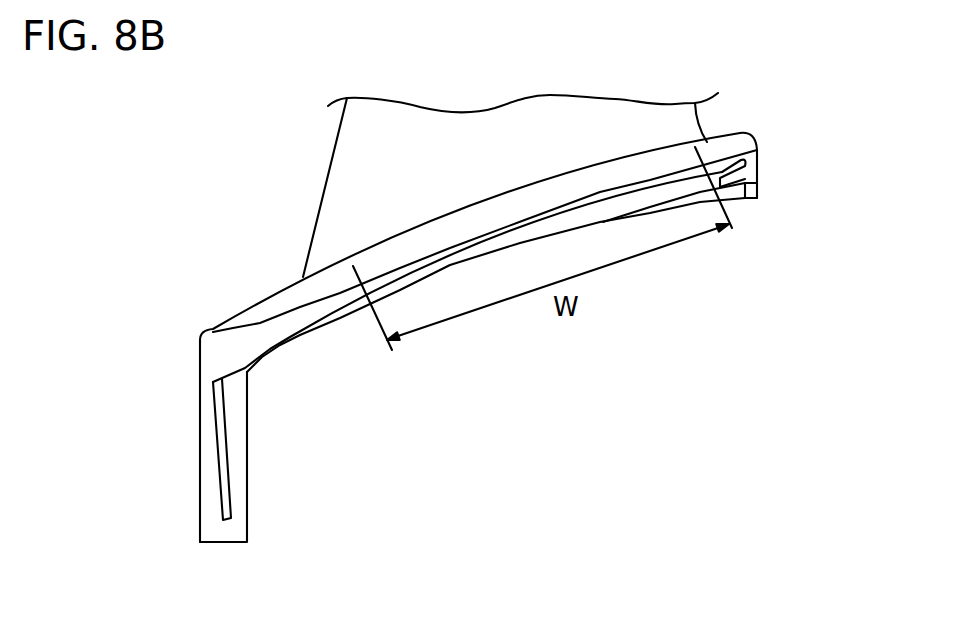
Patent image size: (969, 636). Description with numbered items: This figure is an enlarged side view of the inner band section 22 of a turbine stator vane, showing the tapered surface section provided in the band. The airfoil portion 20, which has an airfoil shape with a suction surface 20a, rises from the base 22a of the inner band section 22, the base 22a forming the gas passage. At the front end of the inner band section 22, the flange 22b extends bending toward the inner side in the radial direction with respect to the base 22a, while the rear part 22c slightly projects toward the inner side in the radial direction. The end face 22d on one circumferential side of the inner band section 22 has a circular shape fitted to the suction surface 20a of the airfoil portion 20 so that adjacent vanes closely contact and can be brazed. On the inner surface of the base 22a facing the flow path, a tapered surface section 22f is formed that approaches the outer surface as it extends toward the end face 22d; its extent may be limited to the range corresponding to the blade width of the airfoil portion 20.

The airfoil portion 20 is at (478, 185).
The suction surface 20a is at (337, 222).
The inner band section 22 is at (483, 303).
The base 22a is at (603, 171).
The flange 22b is at (208, 508).
The rear part 22c is at (757, 160).
The end face 22d is at (455, 252).
The tapered surface section 22f is at (522, 223).